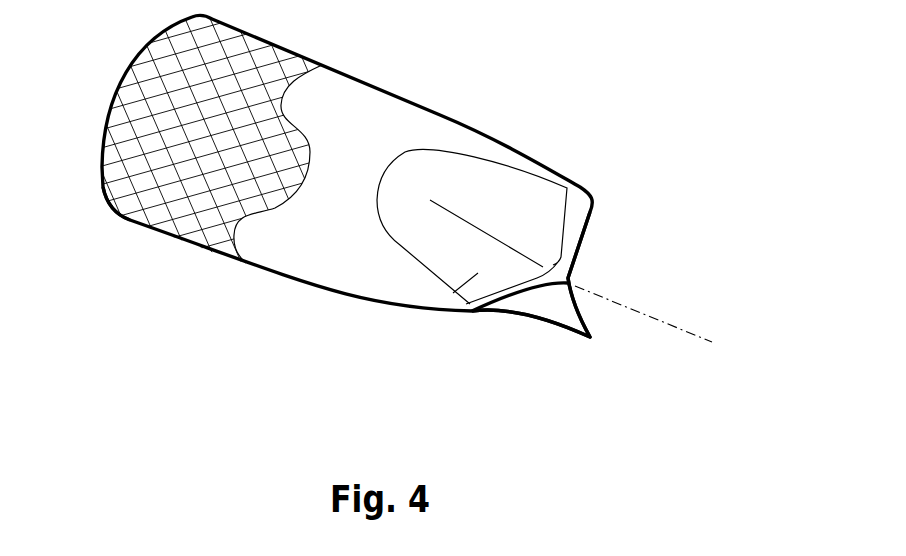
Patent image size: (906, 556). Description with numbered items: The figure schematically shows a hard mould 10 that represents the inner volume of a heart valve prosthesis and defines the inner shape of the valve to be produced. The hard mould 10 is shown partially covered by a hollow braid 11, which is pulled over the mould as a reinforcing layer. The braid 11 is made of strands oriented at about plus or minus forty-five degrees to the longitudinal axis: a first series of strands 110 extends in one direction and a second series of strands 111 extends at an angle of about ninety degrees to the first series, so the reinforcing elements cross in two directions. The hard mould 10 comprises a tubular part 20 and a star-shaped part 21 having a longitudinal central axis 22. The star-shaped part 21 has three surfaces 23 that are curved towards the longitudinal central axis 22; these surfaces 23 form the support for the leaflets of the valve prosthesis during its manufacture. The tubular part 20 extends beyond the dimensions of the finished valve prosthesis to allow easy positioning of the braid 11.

The hard mould 10 is at (682, 89).
The hollow braid 11 is at (140, 60).
The first series of strands 110 is at (136, 224).
The second series of strands 111 is at (199, 238).
The tubular part 20 is at (379, 107).
The star-shaped part 21 is at (587, 230).
The longitudinal central axis 22 is at (678, 324).
The surfaces 23 is at (568, 186).